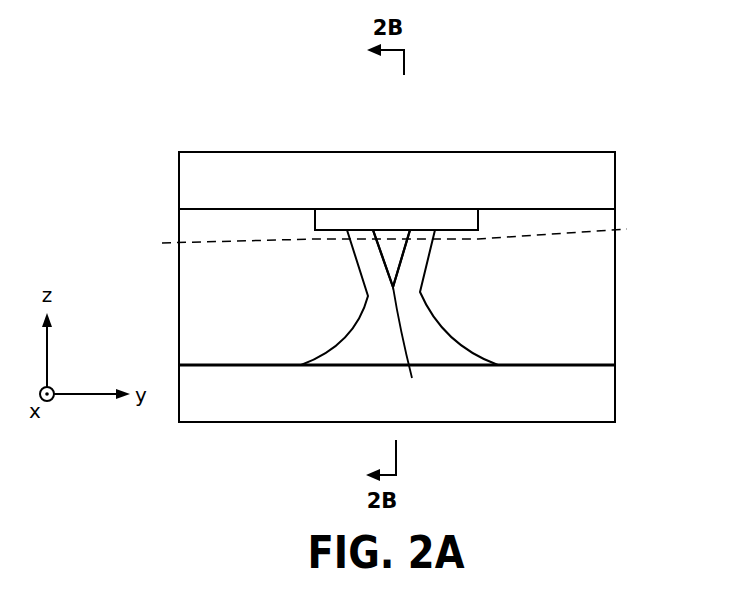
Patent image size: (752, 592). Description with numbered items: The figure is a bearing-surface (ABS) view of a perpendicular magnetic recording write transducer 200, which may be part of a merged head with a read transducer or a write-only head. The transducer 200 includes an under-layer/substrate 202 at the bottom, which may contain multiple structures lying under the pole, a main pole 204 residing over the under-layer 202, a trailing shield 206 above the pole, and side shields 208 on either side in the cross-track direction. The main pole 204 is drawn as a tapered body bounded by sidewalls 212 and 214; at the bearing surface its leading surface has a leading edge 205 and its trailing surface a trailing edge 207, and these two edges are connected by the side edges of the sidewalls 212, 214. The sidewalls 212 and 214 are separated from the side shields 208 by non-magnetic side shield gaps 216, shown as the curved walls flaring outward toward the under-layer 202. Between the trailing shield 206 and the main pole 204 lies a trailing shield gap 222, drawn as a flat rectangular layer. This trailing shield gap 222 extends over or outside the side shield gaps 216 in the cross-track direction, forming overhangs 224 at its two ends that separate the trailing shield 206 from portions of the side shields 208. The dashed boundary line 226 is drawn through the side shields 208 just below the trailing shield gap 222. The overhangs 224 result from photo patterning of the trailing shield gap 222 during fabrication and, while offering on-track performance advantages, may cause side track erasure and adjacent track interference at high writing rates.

The perpendicular magnetic recording transducer 200 is at (174, 114).
The under-layer/substrate 202 is at (560, 403).
The main pole 204 is at (397, 243).
The leading edge 205 is at (417, 348).
The trailing shield 206 is at (562, 190).
The trailing edge 207 is at (402, 230).
The side shields 208 is at (255, 275).
The sidewall 212 is at (378, 258).
The sidewall 214 is at (405, 258).
The side shield gaps 216 is at (380, 284).
The trailing shield gap 222 is at (393, 217).
The overhangs 224 is at (324, 209).
The dashed boundary line 226 is at (392, 235).